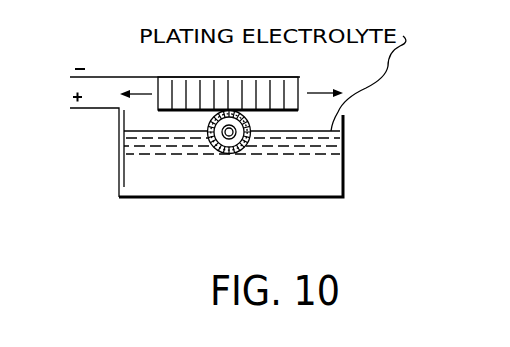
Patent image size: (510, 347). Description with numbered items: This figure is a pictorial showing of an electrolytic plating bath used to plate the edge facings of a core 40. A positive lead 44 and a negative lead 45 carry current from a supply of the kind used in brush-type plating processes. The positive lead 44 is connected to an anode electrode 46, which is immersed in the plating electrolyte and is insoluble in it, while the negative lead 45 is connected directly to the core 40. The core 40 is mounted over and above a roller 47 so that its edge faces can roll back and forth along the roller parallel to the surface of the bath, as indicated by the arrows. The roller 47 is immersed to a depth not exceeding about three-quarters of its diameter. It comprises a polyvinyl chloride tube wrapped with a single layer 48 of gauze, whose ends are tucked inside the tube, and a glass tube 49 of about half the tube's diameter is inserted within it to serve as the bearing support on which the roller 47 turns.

The core 40 is at (300, 77).
The lead (+) 44 is at (97, 108).
The lead (-) 45 is at (97, 77).
The anode electrode 46 is at (123, 172).
The roller 47 is at (251, 125).
The single layer of gauze 48 is at (233, 141).
The glass tube 49 is at (224, 150).